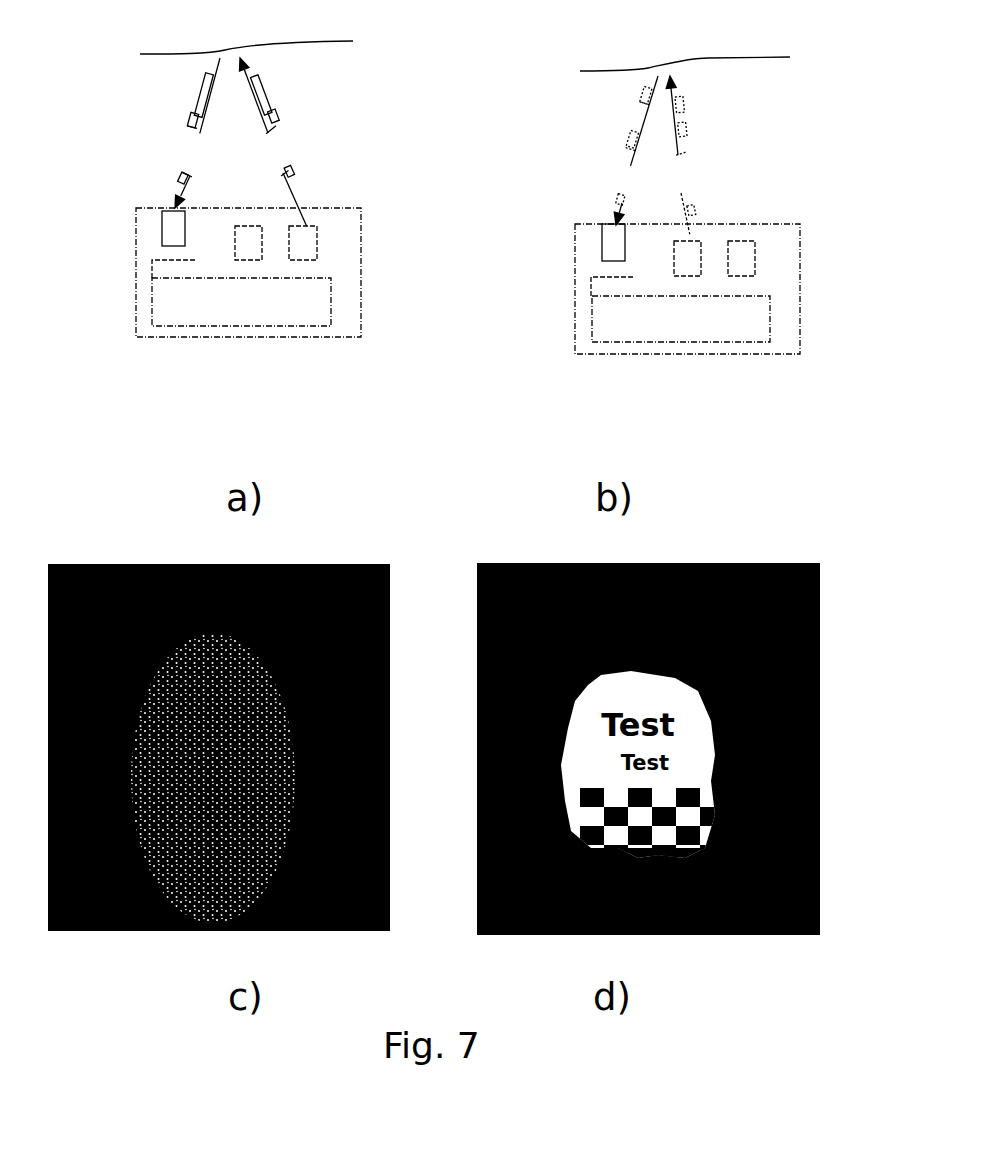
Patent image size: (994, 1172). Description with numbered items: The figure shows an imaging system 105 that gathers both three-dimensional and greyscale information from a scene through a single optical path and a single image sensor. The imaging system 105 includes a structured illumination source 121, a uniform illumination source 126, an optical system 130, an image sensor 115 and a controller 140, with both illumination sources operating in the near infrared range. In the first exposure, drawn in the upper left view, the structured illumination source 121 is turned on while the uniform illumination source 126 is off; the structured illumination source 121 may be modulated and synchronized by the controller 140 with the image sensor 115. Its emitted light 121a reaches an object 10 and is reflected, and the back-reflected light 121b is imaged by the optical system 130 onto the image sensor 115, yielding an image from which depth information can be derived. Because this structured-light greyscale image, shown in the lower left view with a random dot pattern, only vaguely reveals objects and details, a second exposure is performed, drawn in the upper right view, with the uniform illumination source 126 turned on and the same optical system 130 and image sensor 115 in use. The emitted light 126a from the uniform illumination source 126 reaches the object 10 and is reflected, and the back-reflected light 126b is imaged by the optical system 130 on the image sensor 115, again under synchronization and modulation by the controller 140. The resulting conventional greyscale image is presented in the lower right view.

The object 10 is at (247, 37).
The imaging system 105 is at (242, 330).
The image sensor 115 is at (128, 253).
The structured illumination source 121 is at (309, 234).
The emitted light from the structured illumination source 121a is at (278, 142).
The back-reflected light from the structured illumination source 121b is at (196, 131).
The uniform illumination source 126 is at (242, 252).
The emitted light from the uniform illumination source 126a is at (691, 155).
The back-reflected light from the uniform illumination source 126b is at (635, 149).
The optical system 130 is at (154, 221).
The controller 140 is at (233, 320).